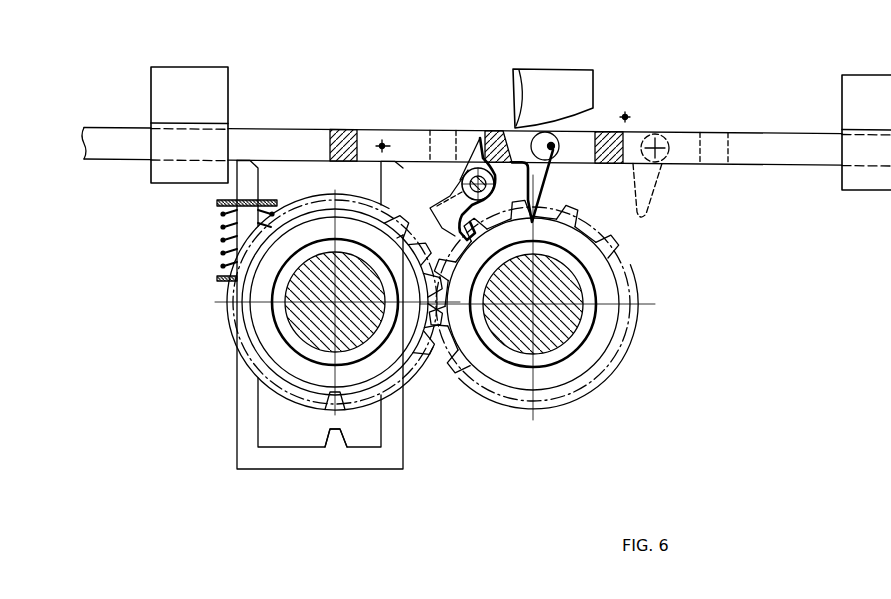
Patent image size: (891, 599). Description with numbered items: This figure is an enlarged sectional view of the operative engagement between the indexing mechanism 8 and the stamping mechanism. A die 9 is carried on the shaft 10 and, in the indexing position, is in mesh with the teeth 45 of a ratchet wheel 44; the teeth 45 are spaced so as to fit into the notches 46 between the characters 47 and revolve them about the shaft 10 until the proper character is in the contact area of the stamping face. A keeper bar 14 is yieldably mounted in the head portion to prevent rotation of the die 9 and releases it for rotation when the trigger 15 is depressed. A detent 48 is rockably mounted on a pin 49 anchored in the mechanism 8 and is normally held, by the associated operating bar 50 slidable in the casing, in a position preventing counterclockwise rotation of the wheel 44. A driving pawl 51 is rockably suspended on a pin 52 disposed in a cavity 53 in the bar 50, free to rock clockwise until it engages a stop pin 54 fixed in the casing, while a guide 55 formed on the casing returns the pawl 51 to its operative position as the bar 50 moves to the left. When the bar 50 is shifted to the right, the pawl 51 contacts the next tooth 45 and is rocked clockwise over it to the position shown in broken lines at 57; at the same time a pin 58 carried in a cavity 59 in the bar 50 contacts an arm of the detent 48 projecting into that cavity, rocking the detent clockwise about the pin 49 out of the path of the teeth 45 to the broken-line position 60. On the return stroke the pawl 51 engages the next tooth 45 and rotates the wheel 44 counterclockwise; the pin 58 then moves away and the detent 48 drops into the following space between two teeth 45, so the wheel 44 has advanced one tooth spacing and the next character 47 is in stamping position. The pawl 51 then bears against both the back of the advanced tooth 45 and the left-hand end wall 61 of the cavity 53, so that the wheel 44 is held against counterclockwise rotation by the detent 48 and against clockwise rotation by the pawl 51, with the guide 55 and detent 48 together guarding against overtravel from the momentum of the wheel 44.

The indexing mechanism 8 is at (852, 80).
The die 9 is at (330, 295).
The shaft 10 is at (308, 322).
The keeper bar 14 is at (335, 448).
The trigger 15 is at (242, 441).
The ratchet wheel 44 is at (540, 297).
The teeth 45 is at (577, 218).
The notches 46 is at (384, 191).
The characters 47 is at (458, 352).
The detent 48 is at (470, 170).
The pin 49 is at (447, 195).
The operating bar 50 is at (322, 128).
The driving pawl 51 is at (558, 177).
The pin 52 is at (558, 153).
The cavity 53 is at (591, 130).
The stop pin 54 is at (628, 117).
The guide 55 is at (566, 86).
The right-hand position of pawl 57 is at (652, 188).
The pin 58 is at (385, 141).
The cavity 59 is at (398, 130).
The rocked position of detent 60 is at (464, 166).
The left-hand end wall 61 is at (517, 122).